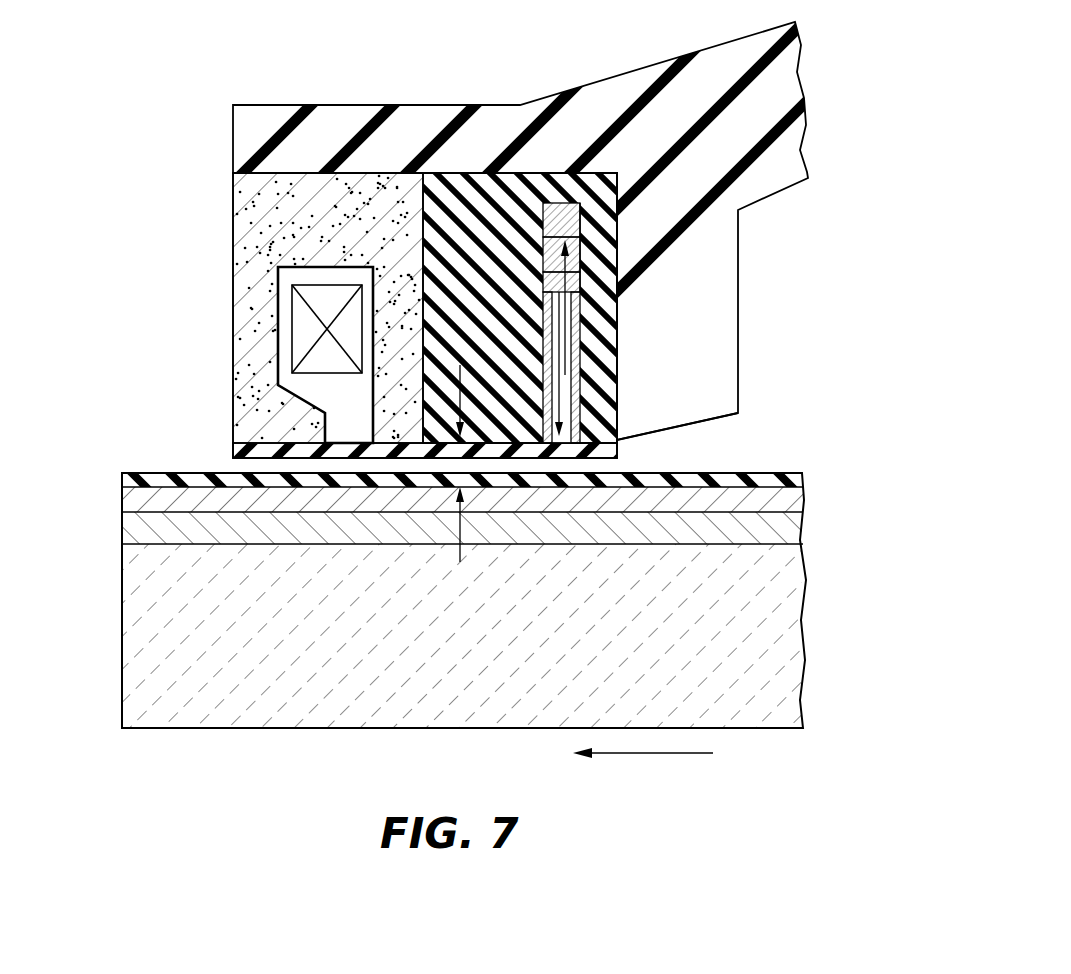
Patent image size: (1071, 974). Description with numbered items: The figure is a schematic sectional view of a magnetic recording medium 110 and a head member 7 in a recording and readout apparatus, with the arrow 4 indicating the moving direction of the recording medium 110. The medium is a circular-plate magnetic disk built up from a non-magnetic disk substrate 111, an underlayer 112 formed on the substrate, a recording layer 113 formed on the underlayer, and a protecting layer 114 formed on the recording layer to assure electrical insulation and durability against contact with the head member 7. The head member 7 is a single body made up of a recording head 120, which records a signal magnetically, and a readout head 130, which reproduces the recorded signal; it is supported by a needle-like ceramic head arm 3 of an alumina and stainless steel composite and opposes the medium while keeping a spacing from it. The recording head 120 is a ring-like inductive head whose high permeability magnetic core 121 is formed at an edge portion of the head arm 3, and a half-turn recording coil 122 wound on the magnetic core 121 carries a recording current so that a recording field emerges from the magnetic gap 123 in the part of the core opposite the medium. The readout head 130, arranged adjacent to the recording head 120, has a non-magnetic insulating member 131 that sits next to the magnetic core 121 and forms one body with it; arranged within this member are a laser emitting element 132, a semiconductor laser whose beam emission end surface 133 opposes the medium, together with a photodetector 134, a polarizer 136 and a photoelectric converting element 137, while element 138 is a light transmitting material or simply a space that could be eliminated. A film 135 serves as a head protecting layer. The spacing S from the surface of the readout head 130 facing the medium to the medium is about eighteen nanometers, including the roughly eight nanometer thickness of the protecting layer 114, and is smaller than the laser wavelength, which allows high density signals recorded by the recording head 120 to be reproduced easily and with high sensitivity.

The head arm 3 is at (717, 78).
The head member 7 is at (395, 180).
The recording head 120 is at (313, 188).
The magnetic core 121 is at (247, 217).
The recording coil 122 is at (303, 322).
The magnetic gap 123 is at (337, 445).
The readout head 130 is at (478, 188).
The non-magnetic insulating member 131 is at (612, 172).
The laser emitting element 132 is at (543, 352).
The beam emission end surface 133 is at (598, 447).
The photodetector 134 is at (592, 239).
The head protecting layer 135 is at (607, 420).
The polarizer 136 is at (581, 262).
The photoelectric converting element 137 is at (547, 203).
The light transmitting material 138 is at (543, 286).
The recording medium 110 is at (315, 735).
The non-magnetic disk substrate 111 is at (790, 660).
The underlayer 112 is at (800, 530).
The recording layer 113 is at (800, 500).
The protecting layer 114 is at (792, 473).
The arrow 4 is at (655, 755).
The spacing S is at (458, 543).